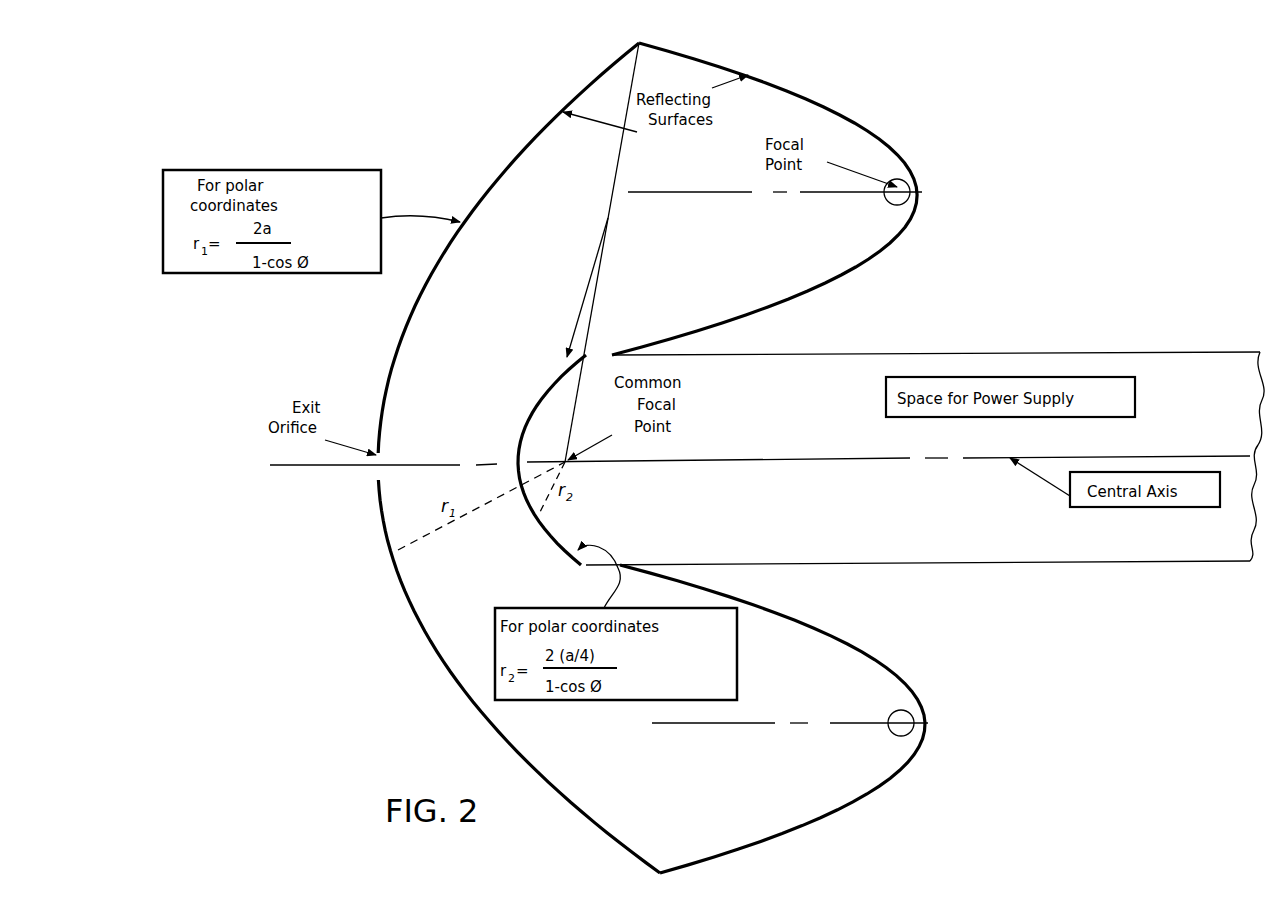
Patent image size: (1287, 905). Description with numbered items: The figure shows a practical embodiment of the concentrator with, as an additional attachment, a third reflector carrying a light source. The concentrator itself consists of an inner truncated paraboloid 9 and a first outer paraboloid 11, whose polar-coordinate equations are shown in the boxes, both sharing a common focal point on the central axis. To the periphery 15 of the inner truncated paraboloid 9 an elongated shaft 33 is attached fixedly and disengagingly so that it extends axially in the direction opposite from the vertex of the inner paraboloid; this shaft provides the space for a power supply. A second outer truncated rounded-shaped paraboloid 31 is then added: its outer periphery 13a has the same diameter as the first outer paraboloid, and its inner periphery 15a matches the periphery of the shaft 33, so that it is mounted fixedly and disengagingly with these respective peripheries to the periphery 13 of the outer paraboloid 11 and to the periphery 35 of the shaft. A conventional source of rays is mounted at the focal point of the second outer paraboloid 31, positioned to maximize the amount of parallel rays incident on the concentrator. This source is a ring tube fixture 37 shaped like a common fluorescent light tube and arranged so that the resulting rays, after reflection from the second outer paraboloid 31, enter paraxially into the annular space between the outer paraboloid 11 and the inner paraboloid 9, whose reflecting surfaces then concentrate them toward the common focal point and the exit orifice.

The inner truncated paraboloid 9 is at (532, 401).
The outer paraboloid 11 is at (495, 185).
The periphery of the outer paraboloid 13 is at (631, 50).
The outer periphery of the second outer paraboloid 13a is at (642, 45).
The periphery of the inner truncated paraboloid 15 is at (582, 354).
The inner periphery of the second outer paraboloid 15a is at (612, 355).
The second outer truncated rounded-shaped paraboloid 31 is at (786, 91).
The elongated shaft 33 is at (1148, 352).
The periphery of the shaft 35 is at (708, 353).
The ring tube fixture 37 is at (887, 205).